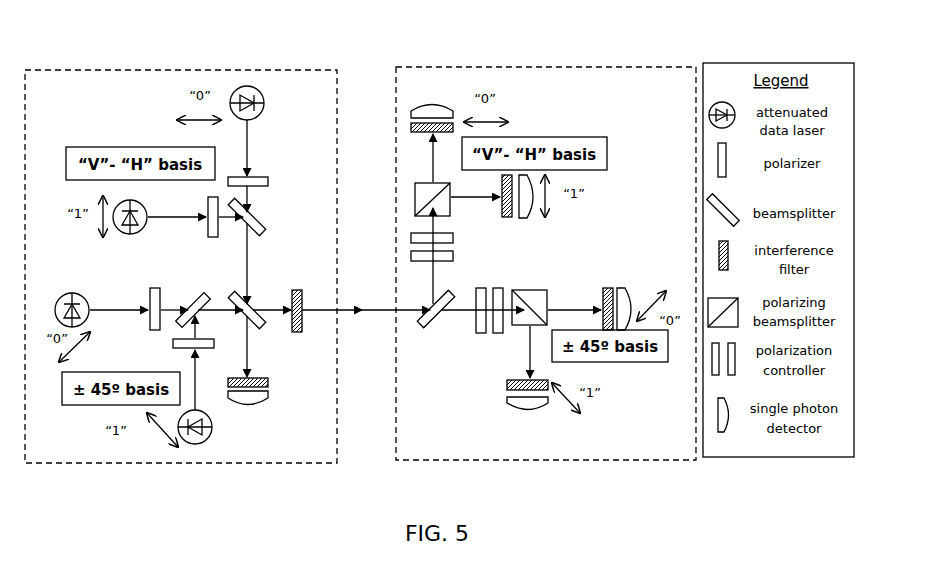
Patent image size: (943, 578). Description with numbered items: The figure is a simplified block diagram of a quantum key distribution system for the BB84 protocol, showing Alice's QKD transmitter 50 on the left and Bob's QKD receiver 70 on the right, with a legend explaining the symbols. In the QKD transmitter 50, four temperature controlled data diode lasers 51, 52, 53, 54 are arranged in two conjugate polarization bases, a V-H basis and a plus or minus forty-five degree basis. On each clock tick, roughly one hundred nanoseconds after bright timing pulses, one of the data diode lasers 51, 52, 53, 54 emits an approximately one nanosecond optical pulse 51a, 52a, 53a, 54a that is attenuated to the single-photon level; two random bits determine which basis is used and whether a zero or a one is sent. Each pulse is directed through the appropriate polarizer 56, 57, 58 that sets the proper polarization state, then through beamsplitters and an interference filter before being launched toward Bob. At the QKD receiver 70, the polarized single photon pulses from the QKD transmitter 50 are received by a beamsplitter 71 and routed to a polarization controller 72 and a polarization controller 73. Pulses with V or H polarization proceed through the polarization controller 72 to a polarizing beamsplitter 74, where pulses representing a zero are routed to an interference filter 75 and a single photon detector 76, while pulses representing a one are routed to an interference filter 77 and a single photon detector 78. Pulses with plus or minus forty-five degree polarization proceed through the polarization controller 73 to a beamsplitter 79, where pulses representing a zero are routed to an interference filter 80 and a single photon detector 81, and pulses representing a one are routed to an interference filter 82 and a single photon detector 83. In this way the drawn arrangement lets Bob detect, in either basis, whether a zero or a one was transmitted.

The QKD transmitter 50 is at (166, 56).
The data diode laser 51 is at (263, 98).
The optical pulse 51a is at (248, 141).
The data diode laser 52 is at (128, 236).
The optical pulse 52a is at (176, 216).
The data diode laser 53 is at (75, 293).
The optical pulse 53a is at (120, 308).
The data diode laser 54 is at (212, 430).
The optical pulse 54a is at (196, 378).
The polarizer 56 is at (218, 237).
The polarizer 57 is at (155, 287).
The polarizer 58 is at (173, 344).
The QKD receiver 70 is at (479, 59).
The beamsplitter 71 is at (438, 325).
The polarization controller 72 is at (457, 255).
The polarization controller 73 is at (480, 335).
The polarizing beamsplitter 74 is at (450, 214).
The interference filter 75 is at (421, 133).
The single photon detector 76 is at (433, 101).
The interference filter 77 is at (506, 218).
The single photon detector 78 is at (534, 219).
The beamsplitter 79 is at (527, 290).
The interference filter 80 is at (612, 288).
The single photon detector 81 is at (636, 292).
The interference filter 82 is at (506, 386).
The single photon detector 83 is at (526, 411).